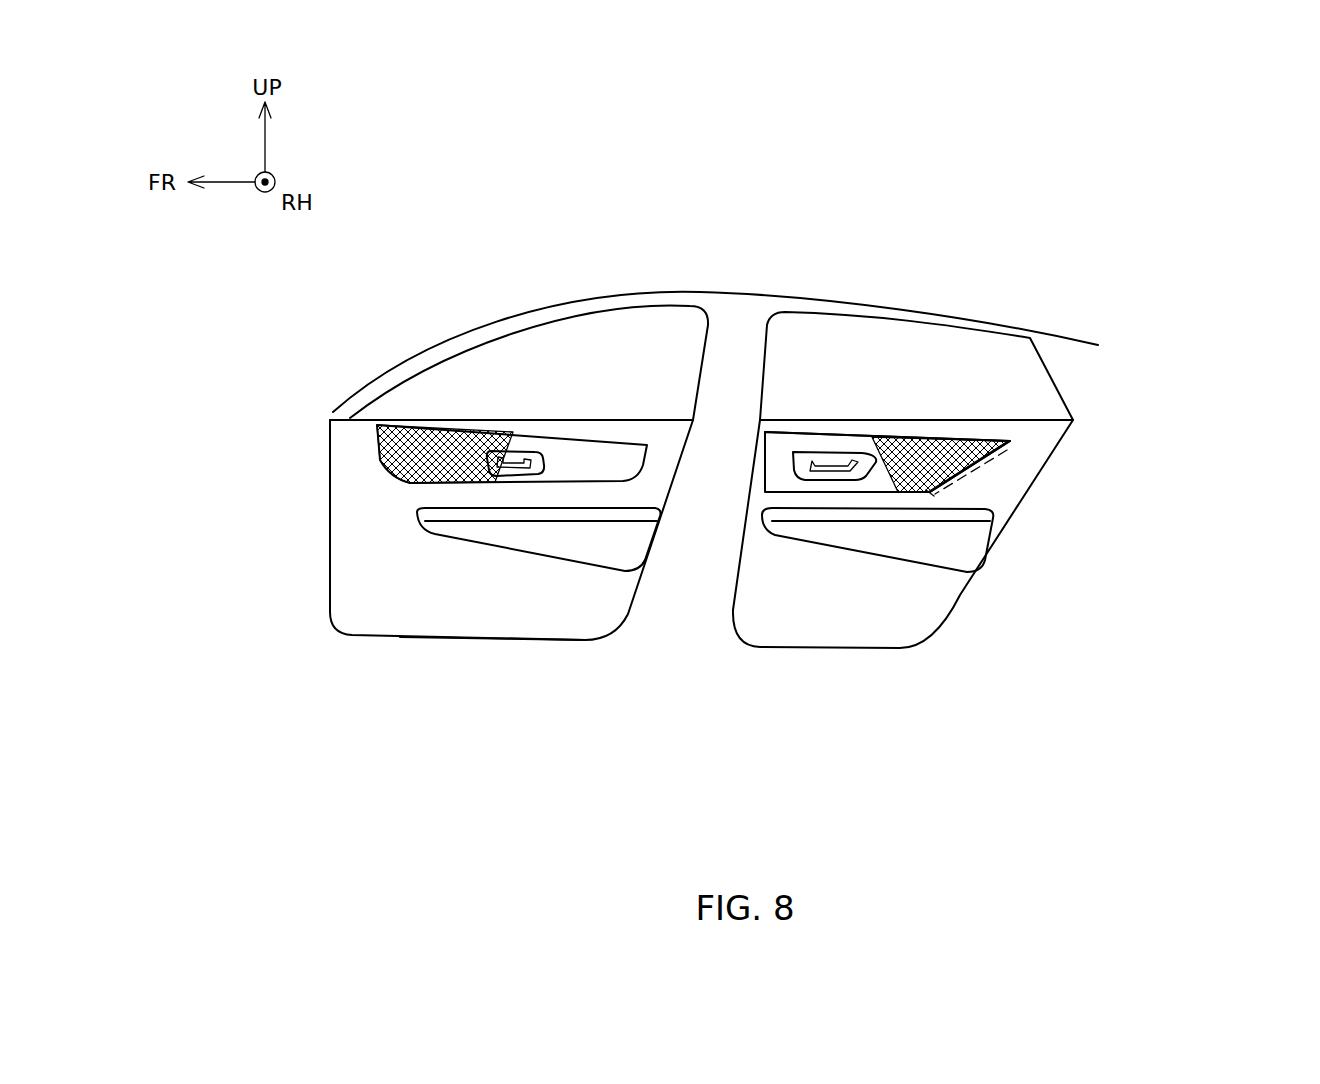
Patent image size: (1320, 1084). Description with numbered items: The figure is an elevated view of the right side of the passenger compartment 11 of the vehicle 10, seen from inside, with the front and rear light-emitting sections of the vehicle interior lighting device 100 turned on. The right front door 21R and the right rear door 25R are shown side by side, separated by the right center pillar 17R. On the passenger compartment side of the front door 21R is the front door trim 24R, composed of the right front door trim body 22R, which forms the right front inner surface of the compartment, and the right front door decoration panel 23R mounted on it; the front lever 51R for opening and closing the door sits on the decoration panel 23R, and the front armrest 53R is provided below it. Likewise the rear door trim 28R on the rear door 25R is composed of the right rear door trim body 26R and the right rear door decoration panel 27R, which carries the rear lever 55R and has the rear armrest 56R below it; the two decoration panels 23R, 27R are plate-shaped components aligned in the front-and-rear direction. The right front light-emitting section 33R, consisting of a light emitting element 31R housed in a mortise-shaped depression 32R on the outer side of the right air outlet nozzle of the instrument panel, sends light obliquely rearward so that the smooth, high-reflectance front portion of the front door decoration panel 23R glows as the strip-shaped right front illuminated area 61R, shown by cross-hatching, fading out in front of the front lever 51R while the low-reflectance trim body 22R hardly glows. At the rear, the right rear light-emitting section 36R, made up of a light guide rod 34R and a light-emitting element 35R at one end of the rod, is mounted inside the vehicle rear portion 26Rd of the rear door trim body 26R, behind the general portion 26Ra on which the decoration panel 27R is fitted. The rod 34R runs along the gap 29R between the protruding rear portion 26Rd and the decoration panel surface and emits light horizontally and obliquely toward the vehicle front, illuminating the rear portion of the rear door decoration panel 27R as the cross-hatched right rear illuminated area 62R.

The vehicle interior lighting device 100 is at (445, 192).
The vehicle 10 is at (1073, 335).
The passenger compartment 11 is at (1013, 761).
The right center pillar 17R is at (738, 360).
The right front door 21R is at (403, 632).
The right front door trim body 22R is at (570, 622).
The right front door decoration panel 23R is at (647, 460).
The front door trim 24R is at (528, 768).
The right rear door 25R is at (880, 650).
The right rear door trim body 26R is at (840, 632).
The general portion of the rear door trim body 26Ra is at (910, 428).
The vehicle rear portion of the rear door trim body 26Rd is at (1010, 455).
The right rear door decoration panel 27R is at (770, 475).
The rear door trim 28R is at (730, 783).
The gap 29R is at (963, 440).
The light emitting element 31R is at (385, 463).
The mortise-shaped depression 32R is at (390, 480).
The right front light-emitting section 33R is at (205, 475).
The light guide rod 34R is at (995, 462).
The light-emitting element 35R is at (943, 498).
The right rear light-emitting section 36R is at (1197, 515).
The front lever 51R is at (520, 463).
The front armrest 53R is at (507, 550).
The rear lever 55R is at (840, 463).
The rear armrest 56R is at (948, 560).
The right front illuminated area 61R is at (435, 442).
The right rear illuminated area 62R is at (940, 447).